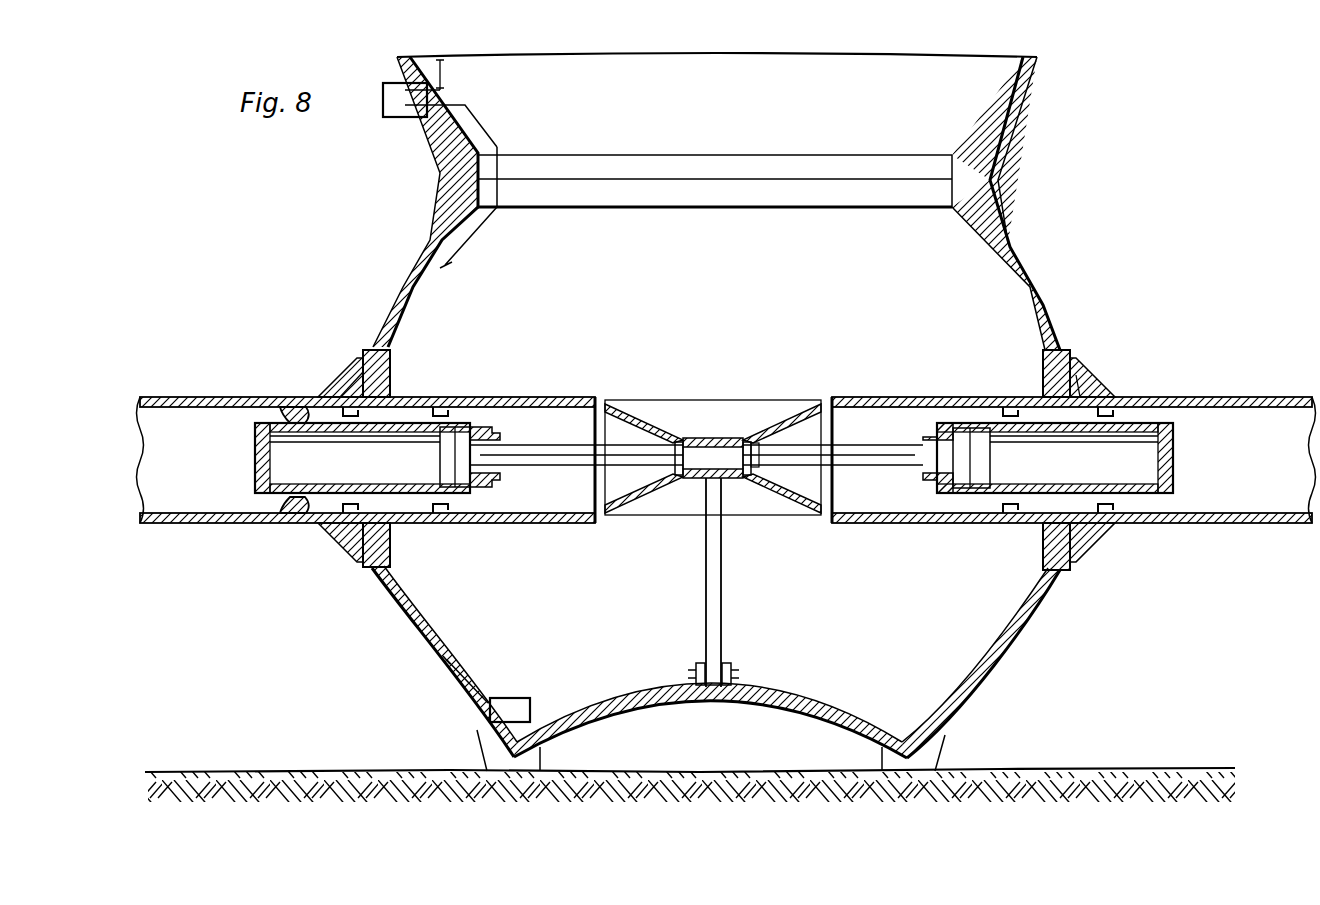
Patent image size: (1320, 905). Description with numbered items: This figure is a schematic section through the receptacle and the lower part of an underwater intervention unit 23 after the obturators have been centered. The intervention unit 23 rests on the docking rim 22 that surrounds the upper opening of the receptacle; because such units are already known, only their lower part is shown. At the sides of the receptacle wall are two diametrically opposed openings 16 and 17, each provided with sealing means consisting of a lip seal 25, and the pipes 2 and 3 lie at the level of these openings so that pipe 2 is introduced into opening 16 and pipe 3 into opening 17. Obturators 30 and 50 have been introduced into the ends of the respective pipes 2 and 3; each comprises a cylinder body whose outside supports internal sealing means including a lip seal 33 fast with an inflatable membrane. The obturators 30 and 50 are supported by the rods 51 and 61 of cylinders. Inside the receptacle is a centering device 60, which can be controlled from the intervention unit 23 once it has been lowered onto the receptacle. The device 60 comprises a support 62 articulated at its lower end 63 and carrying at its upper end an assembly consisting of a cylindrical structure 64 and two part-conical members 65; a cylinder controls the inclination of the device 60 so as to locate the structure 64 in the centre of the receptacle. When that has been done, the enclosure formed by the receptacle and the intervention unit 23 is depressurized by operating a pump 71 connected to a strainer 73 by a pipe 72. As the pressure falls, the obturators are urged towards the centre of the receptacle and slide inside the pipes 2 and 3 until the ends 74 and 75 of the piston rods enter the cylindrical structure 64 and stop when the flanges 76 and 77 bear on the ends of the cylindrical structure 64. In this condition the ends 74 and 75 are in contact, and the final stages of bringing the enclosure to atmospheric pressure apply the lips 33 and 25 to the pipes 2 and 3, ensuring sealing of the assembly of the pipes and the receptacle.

The pipe 2 is at (235, 397).
The pipe 3 is at (1181, 397).
The opening 16 is at (392, 508).
The opening 17 is at (1050, 508).
The rim 22 is at (992, 165).
The underwater intervention unit 23 is at (1003, 148).
The lip seal 25 is at (360, 352).
The obturator 30 is at (251, 463).
The lip seal 33 is at (272, 514).
The obturator 50 is at (1183, 468).
The rod 51 is at (535, 450).
The centering device 60 is at (740, 396).
The rod 61 is at (897, 445).
The support 62 is at (722, 610).
The lower end 63 is at (752, 655).
The cylindrical structure 64 is at (699, 438).
The part-conical members 65 is at (638, 420).
The pump 71 is at (402, 118).
The pipe 72 is at (492, 142).
The strainer 73 is at (517, 697).
The end of piston rod 74 is at (693, 478).
The end of piston rod 75 is at (730, 478).
The flange 76 is at (655, 463).
The flange 77 is at (755, 447).